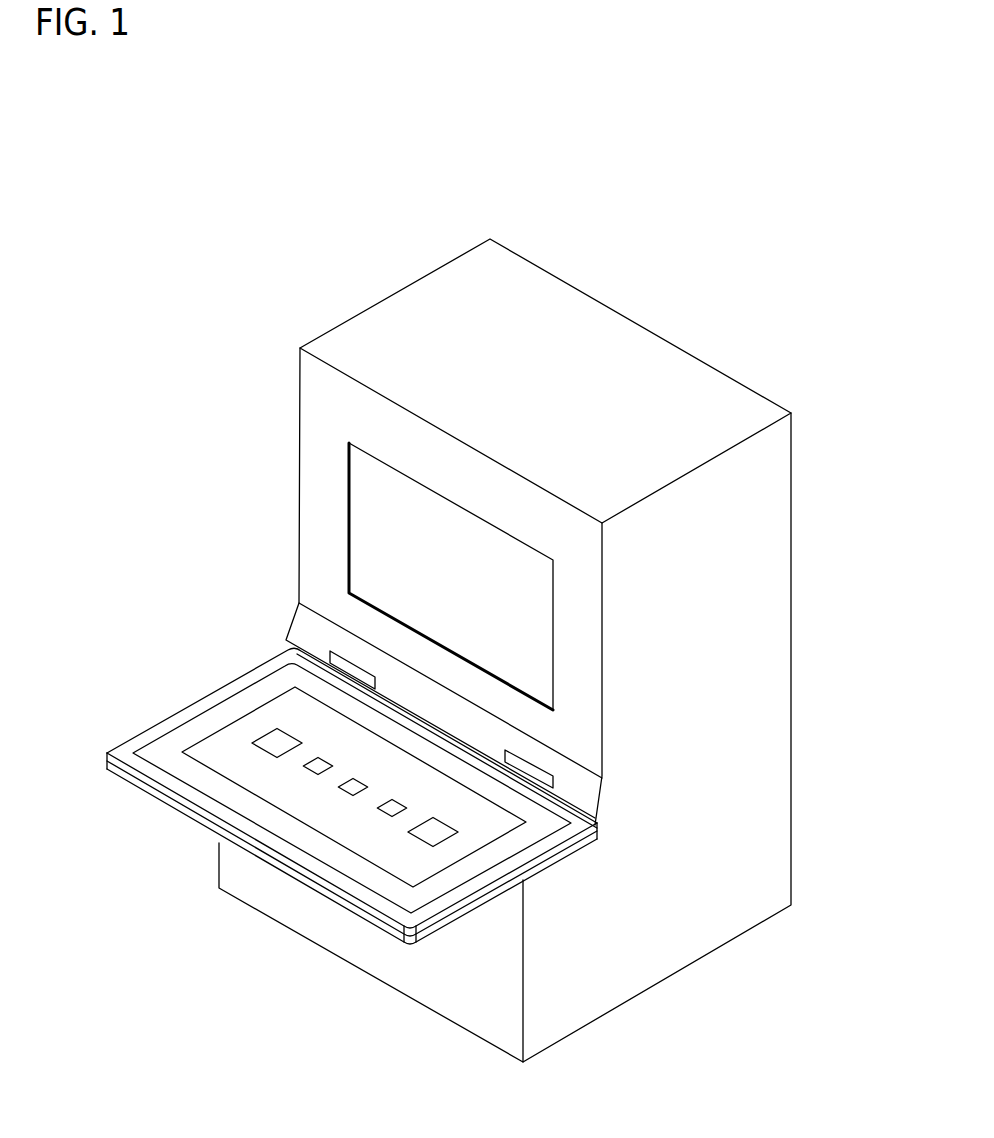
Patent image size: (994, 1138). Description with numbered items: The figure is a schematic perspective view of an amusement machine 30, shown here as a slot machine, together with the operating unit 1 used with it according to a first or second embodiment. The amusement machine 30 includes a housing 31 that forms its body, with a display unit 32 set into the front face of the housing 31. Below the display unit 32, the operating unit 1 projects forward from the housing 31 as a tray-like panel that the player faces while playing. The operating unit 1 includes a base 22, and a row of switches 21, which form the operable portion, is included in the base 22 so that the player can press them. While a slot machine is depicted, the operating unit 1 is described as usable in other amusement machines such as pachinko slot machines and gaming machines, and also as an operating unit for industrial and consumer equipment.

The operating unit 1 is at (170, 722).
The switches 21 is at (320, 765).
The base 22 is at (247, 770).
The amusement machine 30 is at (631, 309).
The housing 31 is at (777, 600).
The display unit 32 is at (370, 527).